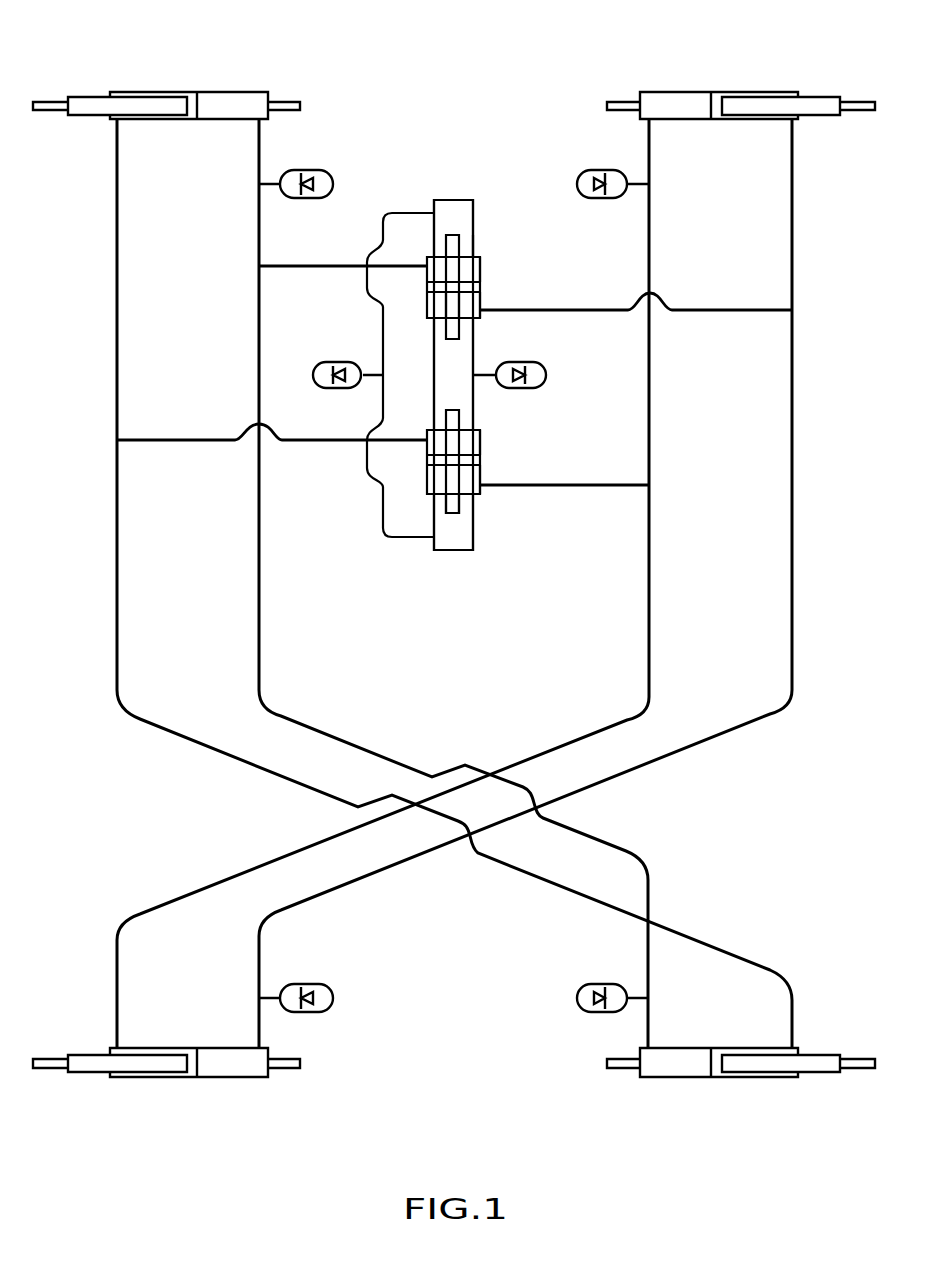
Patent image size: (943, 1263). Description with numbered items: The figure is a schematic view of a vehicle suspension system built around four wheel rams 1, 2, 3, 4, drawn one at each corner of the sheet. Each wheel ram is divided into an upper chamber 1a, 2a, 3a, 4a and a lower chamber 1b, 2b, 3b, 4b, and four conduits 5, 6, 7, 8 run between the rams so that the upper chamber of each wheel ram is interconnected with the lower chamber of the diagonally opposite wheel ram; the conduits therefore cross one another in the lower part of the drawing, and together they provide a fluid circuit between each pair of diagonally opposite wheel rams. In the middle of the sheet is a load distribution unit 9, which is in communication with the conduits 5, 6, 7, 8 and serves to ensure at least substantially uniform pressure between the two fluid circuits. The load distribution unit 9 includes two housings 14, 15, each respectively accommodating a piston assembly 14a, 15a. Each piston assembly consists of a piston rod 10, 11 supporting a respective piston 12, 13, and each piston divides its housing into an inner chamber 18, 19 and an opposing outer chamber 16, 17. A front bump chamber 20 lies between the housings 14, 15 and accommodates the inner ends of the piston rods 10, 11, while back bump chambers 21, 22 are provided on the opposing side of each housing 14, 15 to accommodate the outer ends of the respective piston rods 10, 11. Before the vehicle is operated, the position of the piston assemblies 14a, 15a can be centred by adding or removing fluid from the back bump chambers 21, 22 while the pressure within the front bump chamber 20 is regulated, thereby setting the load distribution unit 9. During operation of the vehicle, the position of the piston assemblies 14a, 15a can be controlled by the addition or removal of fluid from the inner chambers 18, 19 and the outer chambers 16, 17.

The wheel ram 1 is at (197, 92).
The upper chamber 1a is at (268, 92).
The lower chamber 1b is at (117, 92).
The wheel ram 2 is at (715, 92).
The upper chamber 2a is at (641, 92).
The lower chamber 2b is at (797, 92).
The wheel ram 3 is at (715, 1077).
The upper chamber 3a is at (643, 1077).
The lower chamber 3b is at (795, 1077).
The wheel ram 4 is at (195, 1077).
The upper chamber 4a is at (265, 1077).
The lower chamber 4b is at (110, 1077).
The conduit 5 is at (117, 398).
The conduit 6 is at (258, 383).
The conduit 7 is at (650, 393).
The conduit 8 is at (792, 418).
The load distribution unit 9 is at (455, 200).
The piston rod 10 is at (452, 245).
The piston rod 11 is at (453, 420).
The piston 12 is at (433, 282).
The piston 13 is at (440, 462).
The housing 14 is at (478, 487).
The piston assembly 14a is at (455, 500).
The housing 15 is at (474, 250).
The piston assembly 15a is at (453, 308).
The outer chamber 16 is at (480, 272).
The outer chamber 17 is at (473, 477).
The inner chamber 18 is at (480, 317).
The inner chamber 19 is at (470, 446).
The front bump chamber 20 is at (447, 367).
The back bump chamber 21 is at (459, 218).
The back bump chamber 22 is at (450, 549).